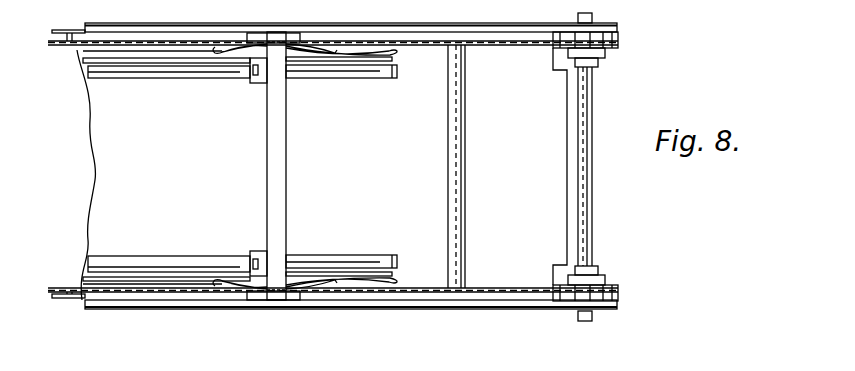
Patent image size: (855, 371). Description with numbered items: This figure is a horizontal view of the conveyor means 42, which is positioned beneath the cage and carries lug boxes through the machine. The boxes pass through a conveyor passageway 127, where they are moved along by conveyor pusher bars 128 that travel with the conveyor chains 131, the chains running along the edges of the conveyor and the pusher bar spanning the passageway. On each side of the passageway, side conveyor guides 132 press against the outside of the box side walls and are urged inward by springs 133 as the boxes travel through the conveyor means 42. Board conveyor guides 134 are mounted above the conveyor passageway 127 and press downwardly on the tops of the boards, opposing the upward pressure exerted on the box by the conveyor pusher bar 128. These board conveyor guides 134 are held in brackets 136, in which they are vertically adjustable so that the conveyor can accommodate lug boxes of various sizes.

The conveyor means 42 is at (111, 326).
The conveyor passageway 127 is at (135, 175).
The conveyor pusher bar 128 is at (460, 156).
The conveyor chain 131 is at (60, 46).
The side conveyor guide 132 is at (178, 60).
The spring 133 is at (215, 52).
The board conveyor guide 134 is at (318, 79).
The bracket 136 is at (248, 76).